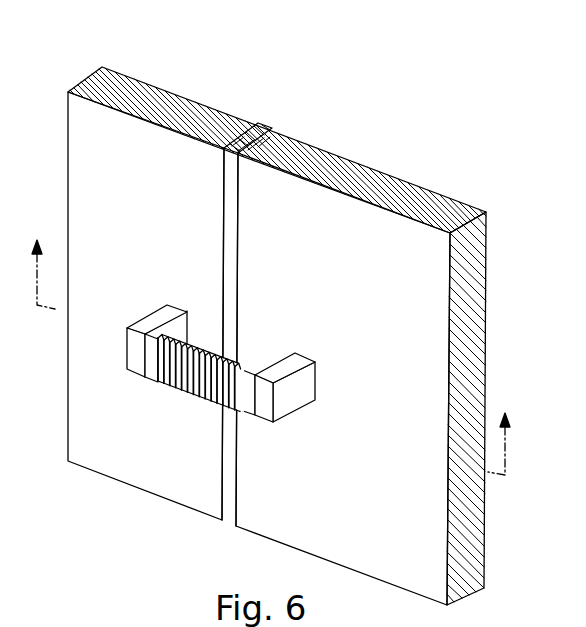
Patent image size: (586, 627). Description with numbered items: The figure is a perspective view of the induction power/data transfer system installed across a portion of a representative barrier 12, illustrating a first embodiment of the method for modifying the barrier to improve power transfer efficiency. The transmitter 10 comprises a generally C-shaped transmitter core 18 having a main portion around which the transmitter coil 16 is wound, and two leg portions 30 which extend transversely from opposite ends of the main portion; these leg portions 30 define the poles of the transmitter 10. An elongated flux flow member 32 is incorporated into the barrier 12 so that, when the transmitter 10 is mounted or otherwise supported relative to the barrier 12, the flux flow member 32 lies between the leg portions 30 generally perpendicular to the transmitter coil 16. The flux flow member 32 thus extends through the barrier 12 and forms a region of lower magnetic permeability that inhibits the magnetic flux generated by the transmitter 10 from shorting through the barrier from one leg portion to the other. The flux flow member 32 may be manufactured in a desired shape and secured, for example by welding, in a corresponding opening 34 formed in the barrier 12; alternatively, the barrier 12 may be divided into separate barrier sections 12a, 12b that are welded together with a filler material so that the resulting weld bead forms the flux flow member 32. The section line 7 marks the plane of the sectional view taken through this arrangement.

The section line 7- 7 is at (270, 343).
The transmitter 10 is at (221, 393).
The barrier 12 is at (277, 334).
The barrier section 12a is at (205, 112).
The barrier section 12b is at (350, 173).
The transmitter coil 16 is at (190, 395).
The transmitter core 18 is at (278, 434).
The leg portions 30 is at (147, 322).
The flux flow member 32 is at (236, 233).
The opening 34 is at (237, 282).